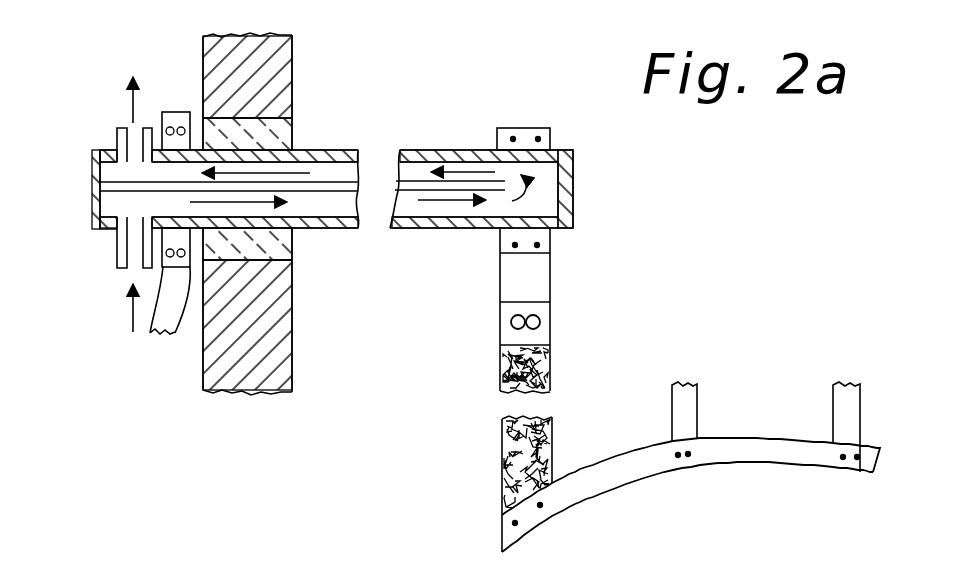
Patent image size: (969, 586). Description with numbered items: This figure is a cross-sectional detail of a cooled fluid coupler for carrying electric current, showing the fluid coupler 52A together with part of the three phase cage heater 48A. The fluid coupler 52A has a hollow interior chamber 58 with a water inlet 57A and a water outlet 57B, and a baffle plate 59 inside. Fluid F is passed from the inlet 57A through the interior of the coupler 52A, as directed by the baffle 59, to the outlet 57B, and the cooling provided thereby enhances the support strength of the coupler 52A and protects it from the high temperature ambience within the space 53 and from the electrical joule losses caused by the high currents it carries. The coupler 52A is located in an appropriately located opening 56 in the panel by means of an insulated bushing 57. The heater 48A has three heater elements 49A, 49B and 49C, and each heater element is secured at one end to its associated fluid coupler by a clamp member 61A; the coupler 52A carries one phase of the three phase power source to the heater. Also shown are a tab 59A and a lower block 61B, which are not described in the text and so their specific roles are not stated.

The three phase cage heater 48A is at (788, 466).
The heater element 49A is at (553, 378).
The heater element 49B is at (689, 407).
The heater element 49C is at (857, 407).
The fluid coupler 52A is at (346, 150).
The space 53 is at (404, 334).
The opening 56 is at (285, 140).
The insulated bushing 57 is at (287, 139).
The water inlet 57A is at (115, 243).
The water outlet 57B is at (116, 140).
The hollow interior chamber 58 is at (420, 208).
The baffle plate 59 is at (357, 203).
The clip tab 59A is at (165, 323).
The clamp member 61A is at (527, 127).
The lower mounting block 61B is at (627, 482).
The fluid F is at (130, 306).